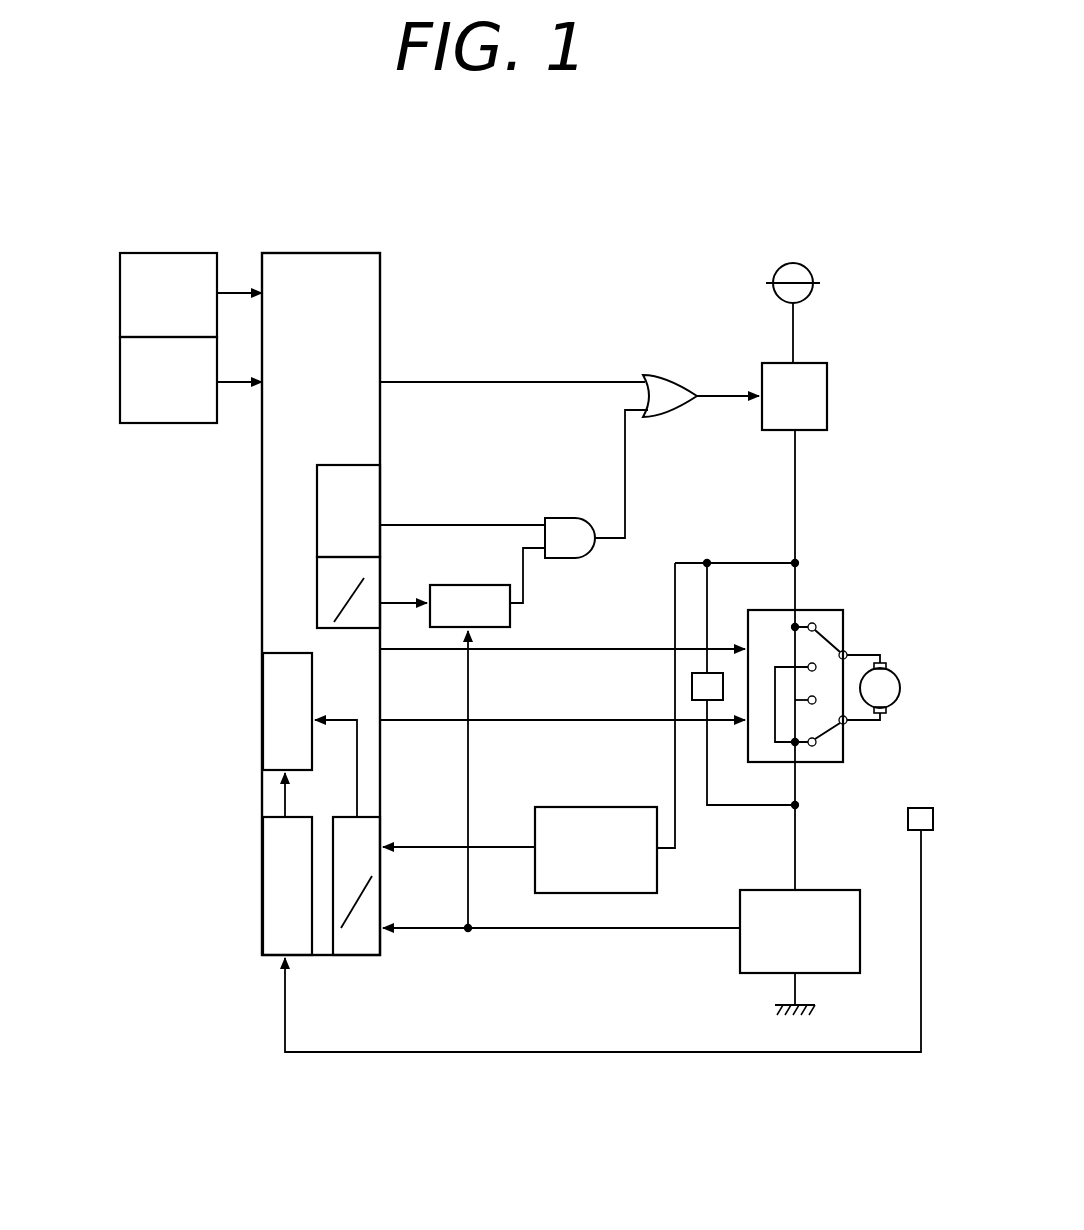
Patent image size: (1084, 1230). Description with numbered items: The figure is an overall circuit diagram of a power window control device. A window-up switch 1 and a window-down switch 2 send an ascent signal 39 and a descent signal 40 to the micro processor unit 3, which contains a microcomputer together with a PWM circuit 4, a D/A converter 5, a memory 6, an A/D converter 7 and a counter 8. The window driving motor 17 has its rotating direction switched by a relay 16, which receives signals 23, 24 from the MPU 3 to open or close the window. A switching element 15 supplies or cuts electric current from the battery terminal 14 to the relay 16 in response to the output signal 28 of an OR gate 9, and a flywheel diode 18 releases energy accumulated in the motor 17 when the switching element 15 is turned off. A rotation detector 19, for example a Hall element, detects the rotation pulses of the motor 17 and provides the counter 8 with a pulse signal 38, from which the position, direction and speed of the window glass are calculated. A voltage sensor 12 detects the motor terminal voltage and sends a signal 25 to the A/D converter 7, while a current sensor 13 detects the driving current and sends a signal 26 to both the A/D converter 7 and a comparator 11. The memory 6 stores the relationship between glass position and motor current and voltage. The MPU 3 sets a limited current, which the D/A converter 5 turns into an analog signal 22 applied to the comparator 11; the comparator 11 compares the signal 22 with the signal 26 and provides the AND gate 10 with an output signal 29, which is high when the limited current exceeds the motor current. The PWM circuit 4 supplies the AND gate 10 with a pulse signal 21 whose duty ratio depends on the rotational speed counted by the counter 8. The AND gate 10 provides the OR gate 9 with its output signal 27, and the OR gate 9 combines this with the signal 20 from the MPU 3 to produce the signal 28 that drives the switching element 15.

The window-up switch 1 is at (170, 253).
The window-down switch 2 is at (160, 423).
The micro processor unit (MPU) 3 is at (325, 253).
The PWM circuit 4 is at (335, 465).
The D/A converter 5 is at (317, 598).
The memory 6 is at (263, 702).
The A/D converter 7 is at (354, 957).
The counter 8 is at (263, 868).
The OR gate 9 is at (656, 374).
The AND gate 10 is at (562, 516).
The comparator 11 is at (630, 627).
The voltage sensor 12 is at (586, 807).
The current sensor 13 is at (860, 960).
The battery terminal 14 is at (806, 265).
The switching element 15 is at (827, 372).
The relay 16 is at (835, 610).
The window driving motor 17 is at (897, 702).
The flywheel diode 18 is at (692, 684).
The rotation detector 19 is at (908, 820).
The signal 20 is at (436, 380).
The pulse signal 21 is at (412, 525).
The analog signal 22 is at (402, 600).
The signal 23 is at (416, 650).
The signal 24 is at (418, 722).
The signal representing the driving voltage 25 is at (416, 848).
The signal representing the driving current 26 is at (457, 932).
The output signal 27 is at (625, 483).
The output signal 28 is at (719, 398).
The output signal 29 is at (524, 587).
The pulse signal 38 is at (575, 1052).
The ascent signal 39 is at (232, 290).
The descent signal 40 is at (230, 392).